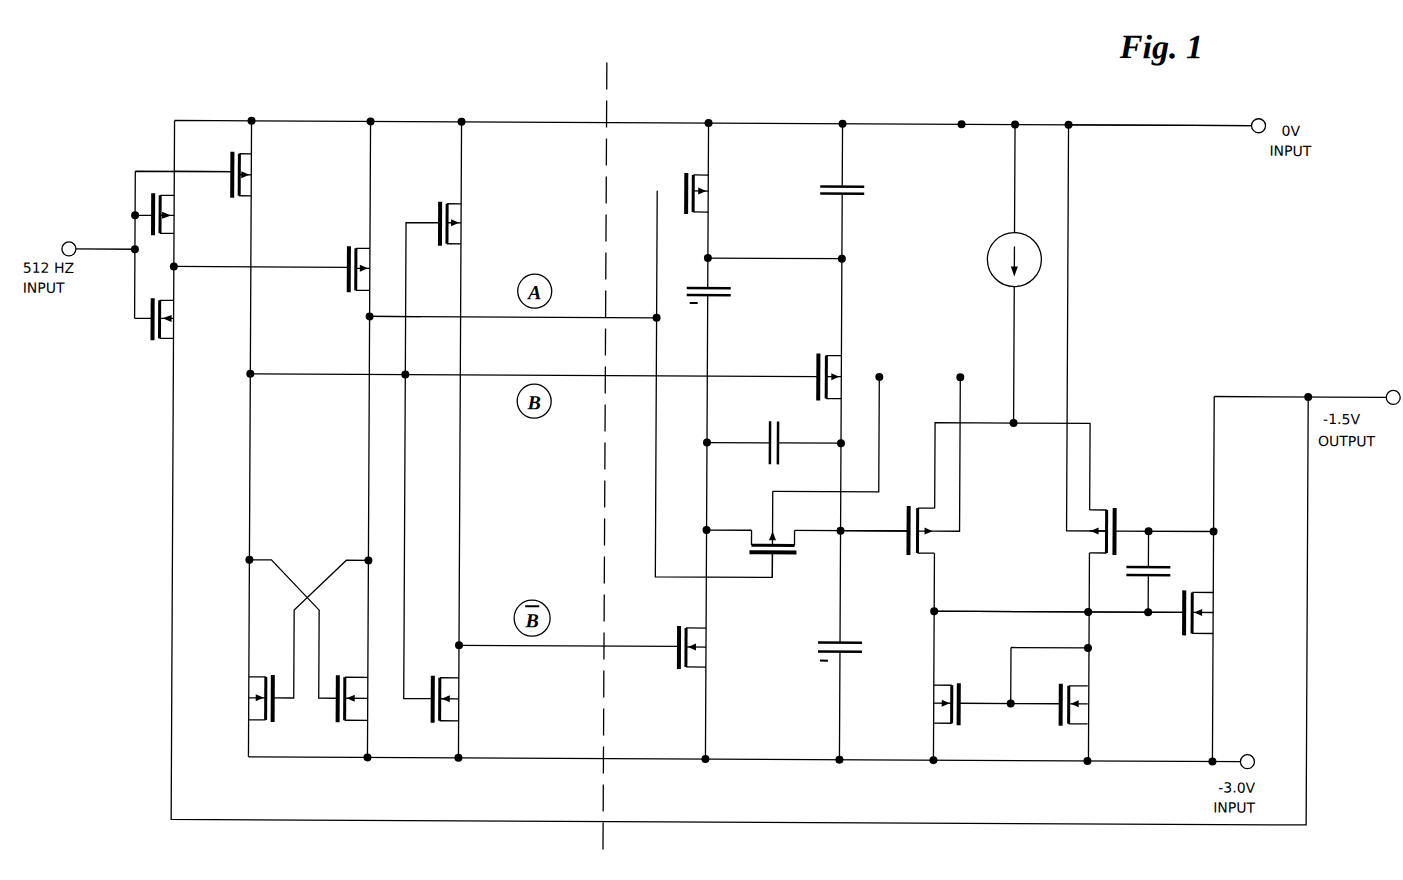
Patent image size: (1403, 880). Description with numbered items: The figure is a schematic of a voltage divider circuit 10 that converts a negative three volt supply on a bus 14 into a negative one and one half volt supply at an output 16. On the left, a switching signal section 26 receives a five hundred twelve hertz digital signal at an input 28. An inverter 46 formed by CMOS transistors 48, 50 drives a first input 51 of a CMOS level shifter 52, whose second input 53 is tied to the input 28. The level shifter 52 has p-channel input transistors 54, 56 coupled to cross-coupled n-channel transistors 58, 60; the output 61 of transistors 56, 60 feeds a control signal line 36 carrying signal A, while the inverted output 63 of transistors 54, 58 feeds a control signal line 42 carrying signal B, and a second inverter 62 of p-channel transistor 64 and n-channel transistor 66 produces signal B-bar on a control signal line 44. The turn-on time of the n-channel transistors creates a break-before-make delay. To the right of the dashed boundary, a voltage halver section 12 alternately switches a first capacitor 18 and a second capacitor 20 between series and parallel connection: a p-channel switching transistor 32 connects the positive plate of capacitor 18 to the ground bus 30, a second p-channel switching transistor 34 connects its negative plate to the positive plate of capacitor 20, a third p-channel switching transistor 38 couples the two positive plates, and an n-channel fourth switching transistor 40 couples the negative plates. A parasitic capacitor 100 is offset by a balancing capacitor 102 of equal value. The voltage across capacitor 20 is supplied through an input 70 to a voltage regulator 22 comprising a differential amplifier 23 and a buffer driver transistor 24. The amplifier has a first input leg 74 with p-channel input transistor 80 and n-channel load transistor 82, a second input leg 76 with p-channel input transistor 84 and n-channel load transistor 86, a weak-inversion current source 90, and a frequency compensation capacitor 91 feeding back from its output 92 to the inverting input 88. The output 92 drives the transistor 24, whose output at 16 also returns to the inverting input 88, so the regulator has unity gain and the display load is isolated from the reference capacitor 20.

The voltage divider circuit 10 is at (997, 71).
The voltage halver section 12 is at (795, 98).
The bus 14 is at (1150, 760).
The output 16 is at (1345, 394).
The first capacitor 18 is at (720, 297).
The second capacitor 20 is at (855, 653).
The voltage regulator 22 is at (1257, 260).
The differential amplifier 23 is at (1036, 163).
The buffer driver transistor 24 is at (1198, 632).
The switching signal section 26 is at (433, 96).
The input 28 is at (108, 252).
The ground bus 30 is at (1160, 126).
The p-channel switching field-effect transistor 32 is at (700, 213).
The second p-channel switching transistor 34 is at (800, 556).
The control signal line 36 is at (495, 319).
The third p-channel switching transistor 38 is at (838, 355).
The fourth switching transistor 40 is at (690, 668).
The control signal line 42 is at (540, 376).
The control signal line 44 is at (490, 648).
The inverter 46 is at (158, 159).
The CMOS transistor 48 is at (172, 267).
The CMOS transistor 50 is at (165, 341).
The first input 51 is at (283, 269).
The CMOS level shifter 52 is at (278, 145).
The second input 53 is at (185, 174).
The p-channel input transistor 54 is at (240, 198).
The p-channel input transistor 56 is at (366, 292).
The cross-coupled n-channel transistor 58 is at (258, 679).
The cross-coupled n-channel transistor 60 is at (354, 679).
The output 61 is at (366, 322).
The second inverter 62 is at (485, 194).
The inverted output 63 is at (256, 378).
The p-channel transistor 64 is at (452, 245).
The n-channel transistor 66 is at (445, 723).
The input 70 is at (853, 532).
The first input leg 74 is at (925, 422).
The second input leg 76 is at (1100, 397).
The p-channel input transistor 80 is at (920, 553).
The n-channel load transistor 82 is at (945, 684).
The p-channel input transistor 84 is at (1100, 508).
The n-channel load transistor 86 is at (1075, 723).
The inverting input 88 is at (1133, 529).
The current source 90 is at (1018, 285).
The frequency compensation capacitor 91 is at (1157, 565).
The output 92 is at (1112, 612).
The parasitic capacitor 100 is at (853, 195).
The balancing capacitor 102 is at (766, 432).